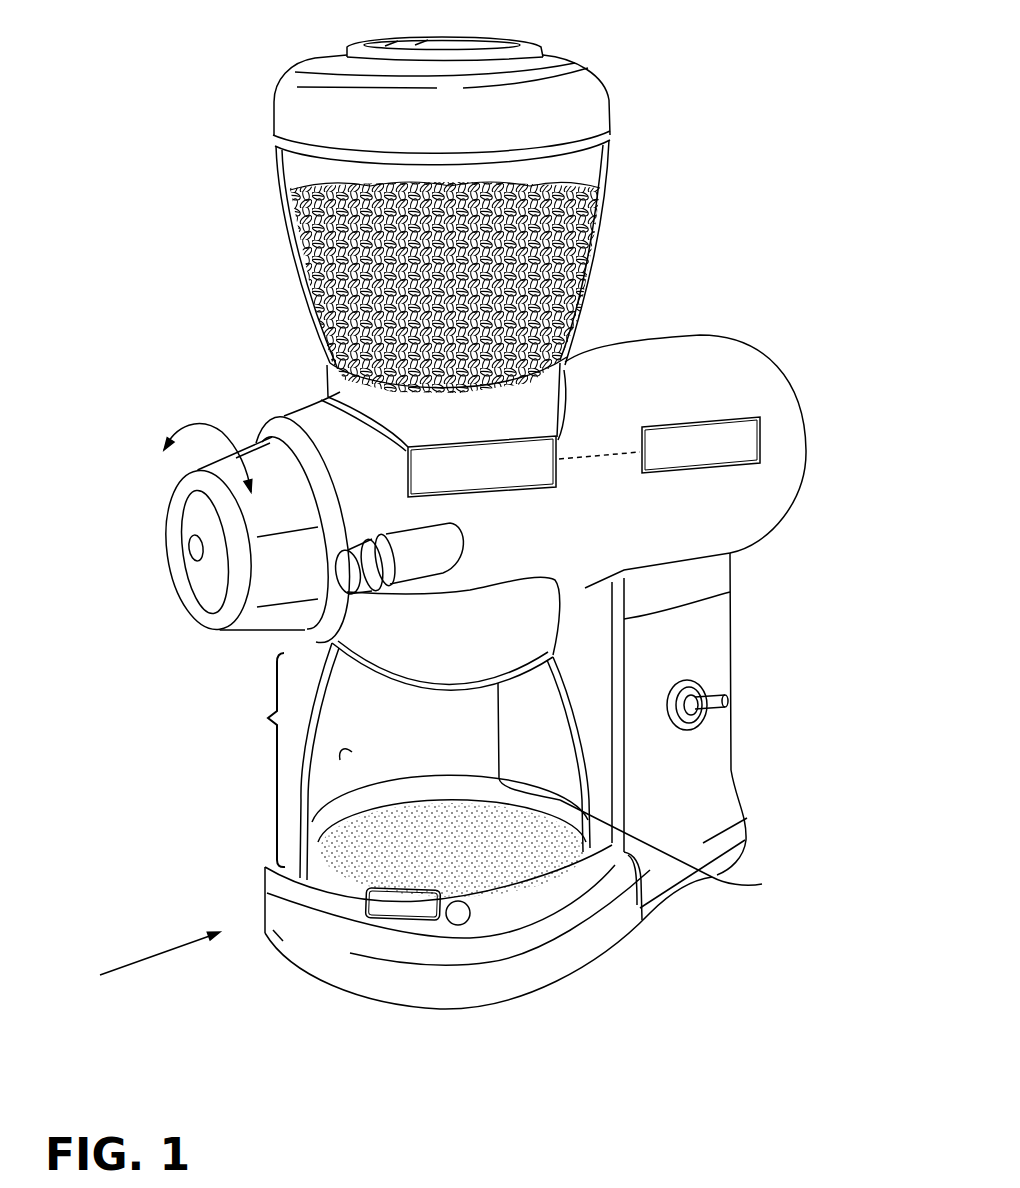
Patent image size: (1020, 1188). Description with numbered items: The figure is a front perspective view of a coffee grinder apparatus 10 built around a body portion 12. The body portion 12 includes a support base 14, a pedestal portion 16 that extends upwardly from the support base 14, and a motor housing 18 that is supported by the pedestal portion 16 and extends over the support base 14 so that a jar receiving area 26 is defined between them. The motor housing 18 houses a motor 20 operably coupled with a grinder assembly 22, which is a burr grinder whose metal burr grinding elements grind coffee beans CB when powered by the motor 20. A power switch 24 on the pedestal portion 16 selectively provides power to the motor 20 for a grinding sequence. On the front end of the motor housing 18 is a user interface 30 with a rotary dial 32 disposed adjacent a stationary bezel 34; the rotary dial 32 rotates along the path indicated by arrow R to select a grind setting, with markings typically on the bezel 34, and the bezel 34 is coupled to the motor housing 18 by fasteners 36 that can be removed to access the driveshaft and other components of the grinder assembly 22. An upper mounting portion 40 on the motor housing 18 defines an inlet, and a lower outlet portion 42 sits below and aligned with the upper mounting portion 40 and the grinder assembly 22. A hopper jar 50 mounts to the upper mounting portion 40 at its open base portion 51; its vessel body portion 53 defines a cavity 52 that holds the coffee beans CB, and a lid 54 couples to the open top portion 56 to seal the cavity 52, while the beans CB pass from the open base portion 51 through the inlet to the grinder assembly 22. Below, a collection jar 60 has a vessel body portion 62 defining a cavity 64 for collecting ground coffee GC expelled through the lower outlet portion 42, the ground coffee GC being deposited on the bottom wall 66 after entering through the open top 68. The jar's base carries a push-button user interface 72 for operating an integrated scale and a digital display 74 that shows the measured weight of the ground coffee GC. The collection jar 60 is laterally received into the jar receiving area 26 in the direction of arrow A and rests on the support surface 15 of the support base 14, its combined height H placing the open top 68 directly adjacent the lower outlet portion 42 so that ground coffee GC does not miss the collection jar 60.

The coffee grinder apparatus 10 is at (762, 185).
The body portion 12 is at (823, 378).
The support base 14 is at (575, 965).
The support surface 15 is at (577, 922).
The pedestal portion 16 is at (710, 643).
The motor housing 18 is at (762, 495).
The motor 20 is at (710, 413).
The grinder assembly 22 is at (520, 440).
The power switch 24 is at (683, 727).
The jar receiving area 26 is at (592, 708).
The user interface 30 is at (132, 576).
The rotary dial 32 is at (190, 478).
The stationary bezel 34 is at (256, 429).
The fasteners 36 is at (318, 641).
The upper mounting portion 40 is at (343, 383).
The lower outlet portion 42 is at (730, 590).
The hopper jar 50 is at (262, 158).
The open base portion 51 is at (320, 353).
The cavity 52 is at (567, 165).
The vessel body portion 53 is at (597, 267).
The lid 54 is at (582, 52).
The open top portion 56 is at (280, 138).
The collection jar 60 is at (270, 776).
The vessel body portion 62 is at (308, 739).
The cavity 64 is at (347, 760).
The bottom wall 66 is at (645, 878).
The open top 68 is at (345, 673).
The user interface 72 is at (459, 925).
The digital display 74 is at (407, 913).
The coffee beans CB is at (293, 233).
The ground coffee GC is at (593, 870).
The combined height H is at (265, 760).
The arrow R is at (172, 422).
The arrow A is at (170, 953).